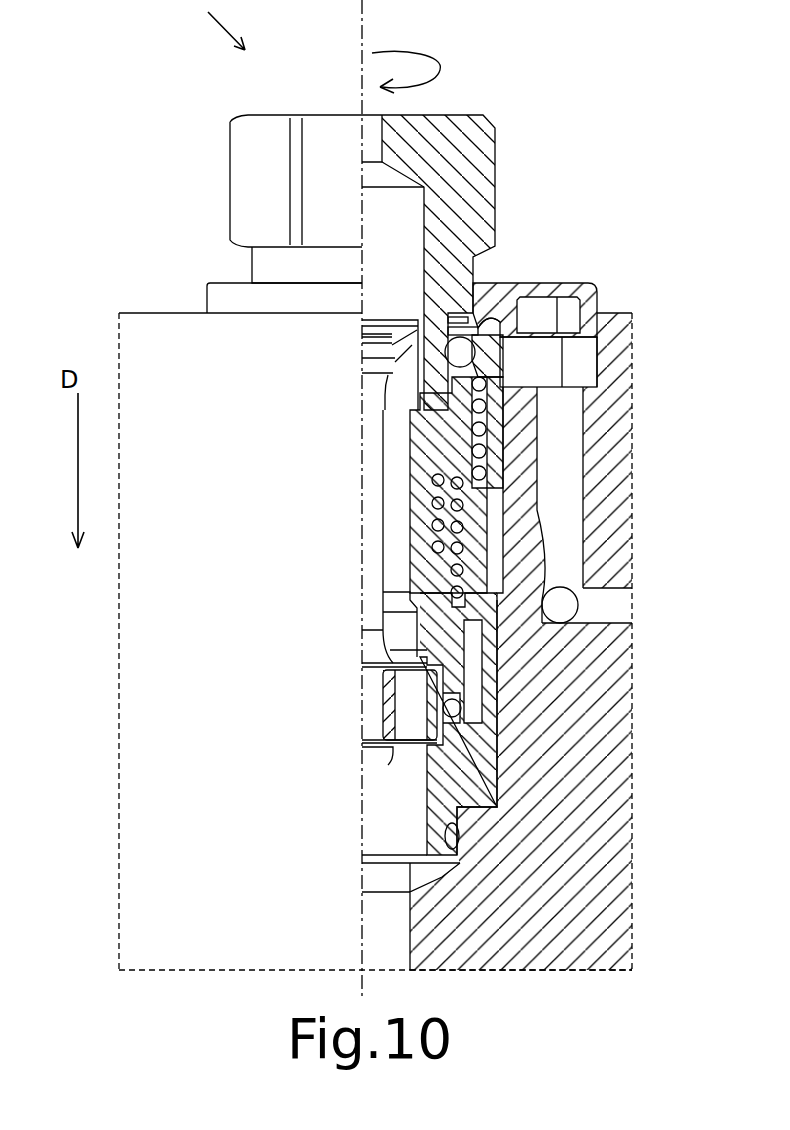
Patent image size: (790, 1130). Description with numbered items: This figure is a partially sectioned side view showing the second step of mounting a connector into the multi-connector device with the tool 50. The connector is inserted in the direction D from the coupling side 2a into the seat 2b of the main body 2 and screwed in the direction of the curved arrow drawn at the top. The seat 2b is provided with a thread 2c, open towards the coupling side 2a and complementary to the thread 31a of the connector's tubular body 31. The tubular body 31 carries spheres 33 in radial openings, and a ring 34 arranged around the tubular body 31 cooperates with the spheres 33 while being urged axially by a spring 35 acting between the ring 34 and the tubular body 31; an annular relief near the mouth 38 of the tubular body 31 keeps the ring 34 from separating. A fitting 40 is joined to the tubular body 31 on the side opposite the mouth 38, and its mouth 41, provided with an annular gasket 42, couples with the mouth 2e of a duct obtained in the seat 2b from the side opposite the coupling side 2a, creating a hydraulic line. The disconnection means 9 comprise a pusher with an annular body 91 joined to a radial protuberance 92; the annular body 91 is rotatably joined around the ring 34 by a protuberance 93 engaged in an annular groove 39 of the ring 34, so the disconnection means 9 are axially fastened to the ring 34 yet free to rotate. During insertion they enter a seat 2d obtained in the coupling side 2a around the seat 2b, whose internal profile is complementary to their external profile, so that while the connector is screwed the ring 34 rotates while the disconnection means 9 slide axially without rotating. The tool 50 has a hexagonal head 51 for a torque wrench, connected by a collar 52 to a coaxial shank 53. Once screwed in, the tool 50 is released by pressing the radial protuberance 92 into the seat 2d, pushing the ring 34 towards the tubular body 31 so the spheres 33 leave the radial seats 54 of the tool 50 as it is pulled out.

The main body 2 is at (160, 822).
The coupling side 2a is at (607, 318).
The seat 2b is at (565, 567).
The thread 2c is at (487, 768).
The seat 2d is at (588, 353).
The mouth 2e is at (587, 968).
The disconnection means 9 is at (197, 267).
The tubular body 31 is at (575, 615).
The thread 31a is at (500, 662).
The spheres 33 is at (470, 400).
The ring 34 is at (497, 470).
The spring 35 is at (497, 510).
The mouth 38 is at (470, 330).
The annular groove 39 is at (510, 337).
The fitting 40 is at (455, 832).
The mouth 41 is at (432, 866).
The annular gasket 42 is at (443, 855).
The tool 50 is at (210, 25).
The head 51 is at (240, 185).
The collar 52 is at (262, 275).
The shank 53 is at (445, 340).
The radial seats 54 is at (455, 332).
The annular body 91 is at (218, 302).
The radial protuberance 92 is at (592, 285).
The protuberance 93 is at (517, 342).